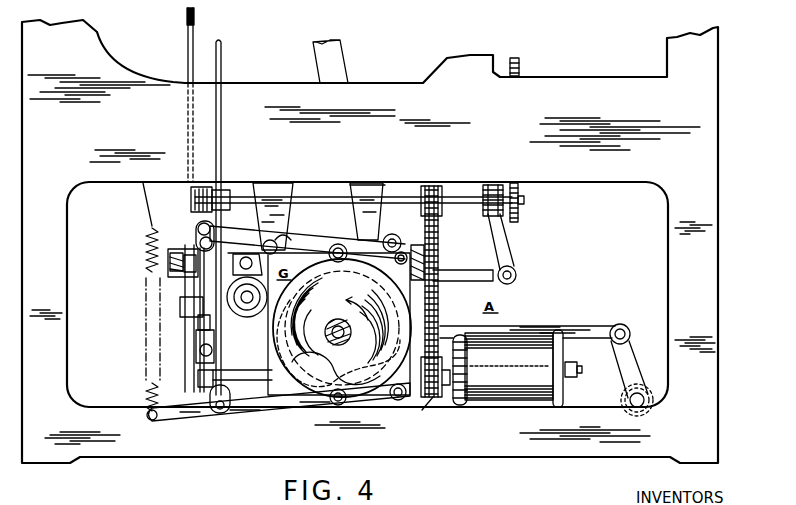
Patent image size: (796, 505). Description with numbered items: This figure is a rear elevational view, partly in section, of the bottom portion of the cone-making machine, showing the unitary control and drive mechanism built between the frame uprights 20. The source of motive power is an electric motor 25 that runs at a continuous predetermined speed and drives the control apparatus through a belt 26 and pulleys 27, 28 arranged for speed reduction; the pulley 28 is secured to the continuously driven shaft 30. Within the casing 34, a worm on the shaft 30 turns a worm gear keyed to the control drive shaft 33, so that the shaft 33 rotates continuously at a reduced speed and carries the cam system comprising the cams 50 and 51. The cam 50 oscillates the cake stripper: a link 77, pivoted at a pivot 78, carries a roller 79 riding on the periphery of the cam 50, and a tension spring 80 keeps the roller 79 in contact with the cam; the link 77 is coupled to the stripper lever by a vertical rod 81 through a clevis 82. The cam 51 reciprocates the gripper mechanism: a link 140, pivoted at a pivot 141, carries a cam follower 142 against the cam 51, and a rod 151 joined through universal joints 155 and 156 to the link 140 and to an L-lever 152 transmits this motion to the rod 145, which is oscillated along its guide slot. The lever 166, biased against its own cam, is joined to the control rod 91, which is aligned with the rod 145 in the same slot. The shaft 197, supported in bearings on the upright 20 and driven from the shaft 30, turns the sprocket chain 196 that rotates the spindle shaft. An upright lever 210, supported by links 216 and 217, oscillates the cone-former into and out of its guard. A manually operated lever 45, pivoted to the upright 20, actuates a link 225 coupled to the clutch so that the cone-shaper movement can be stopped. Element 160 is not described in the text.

The frame upright 20 is at (705, 115).
The upright lever 210 is at (338, 76).
The control rod 91 is at (194, 14).
The rod 145 is at (190, 48).
The vertical rod 81 is at (221, 68).
The sprocket chain 196 is at (520, 68).
The lever 45 is at (505, 240).
The shaft 197 is at (380, 196).
The casing 34 is at (338, 229).
The pulley 28 is at (438, 232).
The link 225 is at (445, 274).
The continuously driven shaft 30 is at (427, 262).
The link 140 is at (300, 245).
The cam follower 142 is at (385, 236).
The pivot 141 is at (403, 252).
The lever 166 is at (215, 238).
The cam 50 is at (290, 333).
The control drive shaft 33 is at (325, 336).
The cam 51 is at (280, 357).
The link 77 is at (255, 408).
The roller 79 is at (332, 404).
The pivot 78 is at (396, 400).
The pulley 27 is at (422, 412).
The clevis 82 is at (212, 412).
The tension spring 80 is at (148, 258).
The universal joint 155 is at (200, 272).
The block 160 is at (200, 305).
The rod 151 is at (198, 322).
The universal joint 156 is at (200, 350).
The L-lever 152 is at (200, 390).
The electric motor 25 is at (523, 368).
The belt 26 is at (445, 330).
The supporting link 216 is at (560, 330).
The supporting link 217 is at (620, 360).